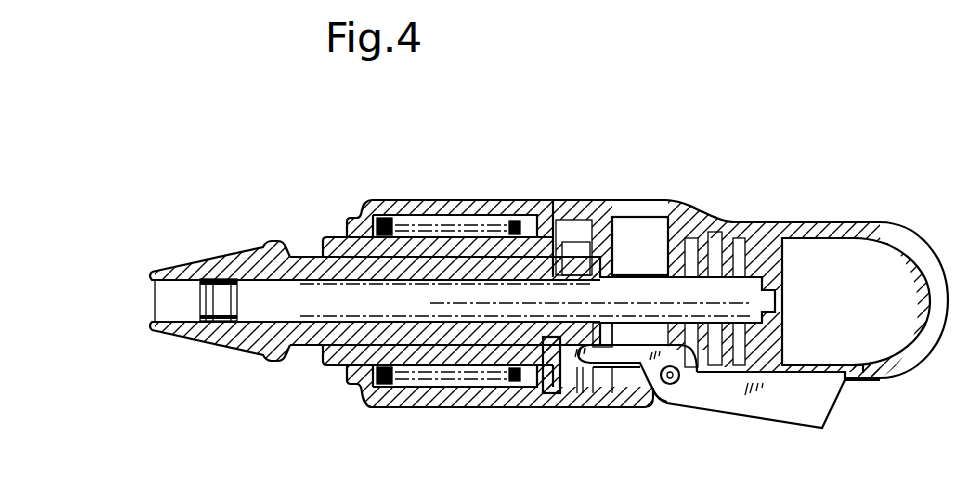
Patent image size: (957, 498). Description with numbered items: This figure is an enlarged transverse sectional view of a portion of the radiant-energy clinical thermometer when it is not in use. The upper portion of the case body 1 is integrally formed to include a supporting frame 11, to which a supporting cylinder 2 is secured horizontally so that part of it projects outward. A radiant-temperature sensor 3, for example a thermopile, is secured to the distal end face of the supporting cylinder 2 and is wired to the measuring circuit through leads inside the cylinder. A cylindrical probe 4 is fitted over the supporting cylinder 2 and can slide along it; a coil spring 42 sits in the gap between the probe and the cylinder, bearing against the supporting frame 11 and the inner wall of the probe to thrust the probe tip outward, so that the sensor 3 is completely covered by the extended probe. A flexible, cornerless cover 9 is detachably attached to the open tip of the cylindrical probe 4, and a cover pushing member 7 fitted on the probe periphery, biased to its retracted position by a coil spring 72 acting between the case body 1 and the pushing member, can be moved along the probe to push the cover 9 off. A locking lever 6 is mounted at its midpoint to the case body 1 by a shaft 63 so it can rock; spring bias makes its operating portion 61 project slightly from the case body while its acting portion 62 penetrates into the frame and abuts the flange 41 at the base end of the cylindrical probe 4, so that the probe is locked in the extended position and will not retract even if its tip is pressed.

The case body 1 is at (765, 226).
The supporting cylinder 2 is at (300, 288).
The radiant-temperature sensor 3 is at (207, 273).
The cylindrical probe 4 is at (292, 345).
The locking lever 6 is at (773, 404).
The cover pushing member 7 is at (333, 366).
The cover 9 is at (183, 347).
The supporting frame 11 is at (632, 238).
The flange 41 is at (548, 397).
The coil spring 42 is at (397, 386).
The operating portion 61 is at (841, 390).
The acting portion 62 is at (581, 400).
The shaft 63 is at (672, 385).
The coil spring 72 is at (513, 222).